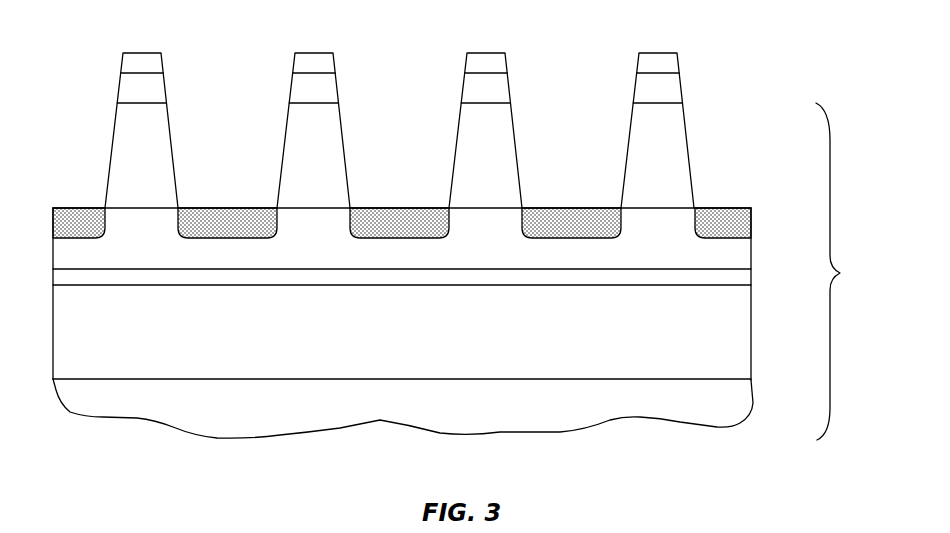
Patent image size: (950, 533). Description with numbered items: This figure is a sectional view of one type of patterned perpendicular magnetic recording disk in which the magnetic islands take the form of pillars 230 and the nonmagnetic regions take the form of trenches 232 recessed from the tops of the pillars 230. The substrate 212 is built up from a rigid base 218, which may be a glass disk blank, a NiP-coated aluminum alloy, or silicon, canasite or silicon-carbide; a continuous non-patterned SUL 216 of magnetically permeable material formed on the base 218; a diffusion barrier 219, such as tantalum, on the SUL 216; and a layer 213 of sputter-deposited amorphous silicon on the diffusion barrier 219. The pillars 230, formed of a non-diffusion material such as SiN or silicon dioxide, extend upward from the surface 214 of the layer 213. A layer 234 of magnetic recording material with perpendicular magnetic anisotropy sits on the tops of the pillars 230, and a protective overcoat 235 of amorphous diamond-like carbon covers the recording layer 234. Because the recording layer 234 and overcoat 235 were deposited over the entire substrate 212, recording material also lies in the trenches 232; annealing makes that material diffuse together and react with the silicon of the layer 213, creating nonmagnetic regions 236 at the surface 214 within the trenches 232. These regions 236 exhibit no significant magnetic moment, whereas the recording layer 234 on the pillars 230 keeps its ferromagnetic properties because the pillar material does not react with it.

The substrate 212 is at (470, 271).
The layer of sputter-deposited amorphous Si 213 is at (730, 258).
The surface 214 is at (625, 209).
The SUL 216 is at (735, 365).
The base 218 is at (680, 408).
The diffusion barrier 219 is at (732, 277).
The pillars 230 is at (153, 172).
The trenches 232 is at (92, 207).
The layer of magnetic recording material 234 is at (153, 97).
The protective overcoat 235 is at (144, 52).
The nonmagnetic regions 236 is at (83, 227).